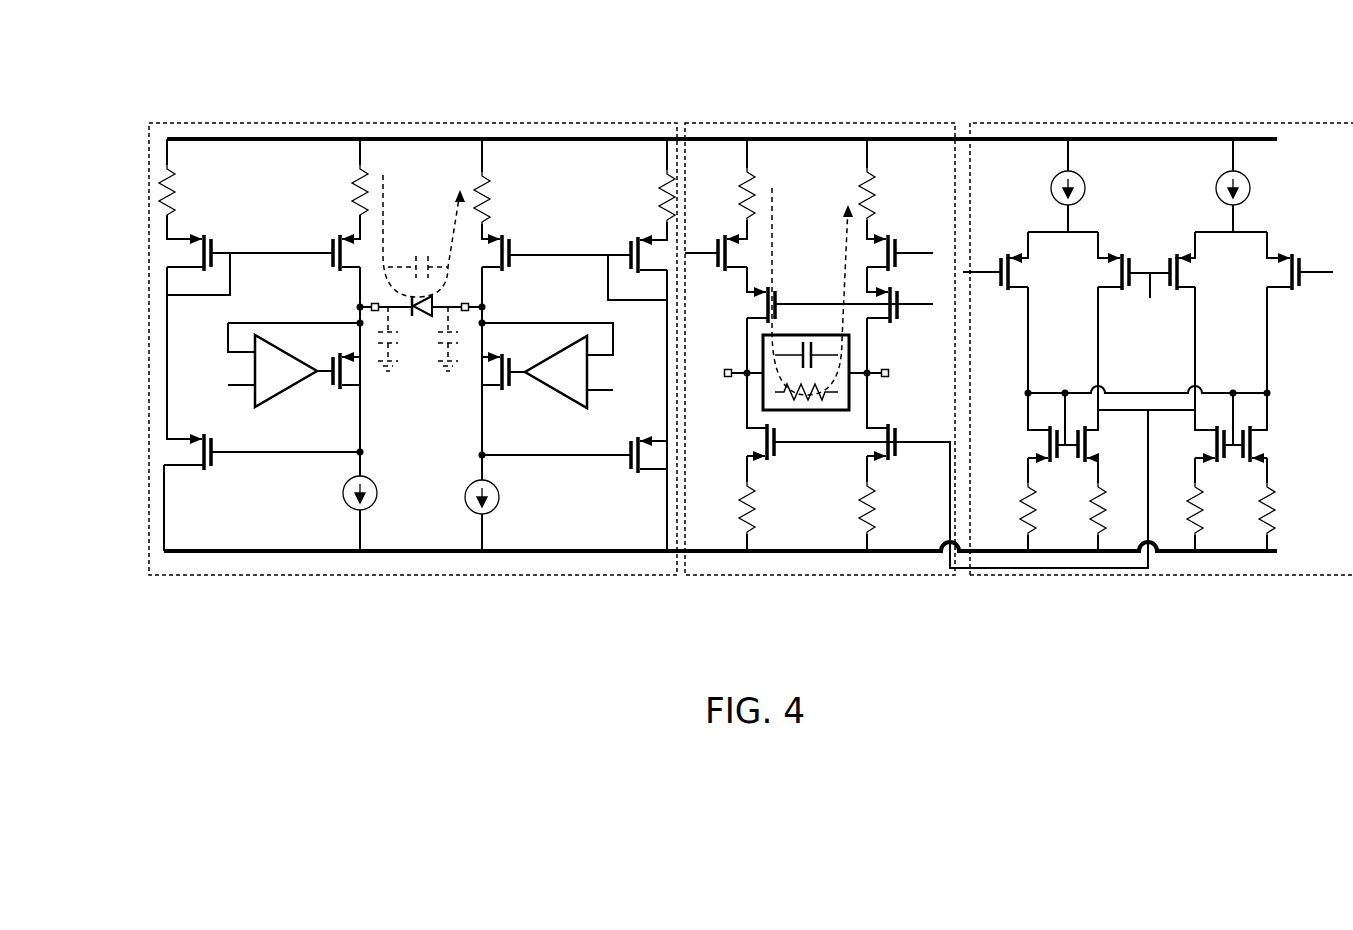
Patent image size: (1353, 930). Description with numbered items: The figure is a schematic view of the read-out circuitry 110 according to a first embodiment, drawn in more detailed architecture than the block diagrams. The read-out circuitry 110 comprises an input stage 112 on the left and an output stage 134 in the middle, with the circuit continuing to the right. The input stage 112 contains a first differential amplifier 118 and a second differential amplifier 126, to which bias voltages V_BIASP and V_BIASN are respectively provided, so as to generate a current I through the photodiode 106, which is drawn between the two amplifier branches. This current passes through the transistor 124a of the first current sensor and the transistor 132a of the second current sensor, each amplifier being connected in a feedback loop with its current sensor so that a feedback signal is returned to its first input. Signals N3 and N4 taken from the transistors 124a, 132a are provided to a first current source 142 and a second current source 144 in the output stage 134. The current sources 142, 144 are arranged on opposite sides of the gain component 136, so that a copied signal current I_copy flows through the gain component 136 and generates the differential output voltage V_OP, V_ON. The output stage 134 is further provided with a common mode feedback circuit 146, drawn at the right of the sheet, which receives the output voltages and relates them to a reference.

The photodiode 106 is at (423, 317).
The read-out circuitry 110 is at (1270, 94).
The input stage 112 is at (650, 123).
The first differential amplifier 118 is at (282, 400).
The transistor 124a is at (340, 272).
The second differential amplifier 126 is at (540, 378).
The transistor 132a is at (500, 240).
The output stage 134 is at (948, 96).
The gain component 136 is at (849, 348).
The first current source 142 is at (727, 255).
The second current source 144 is at (885, 253).
The common mode feedback circuit 146 is at (1033, 123).